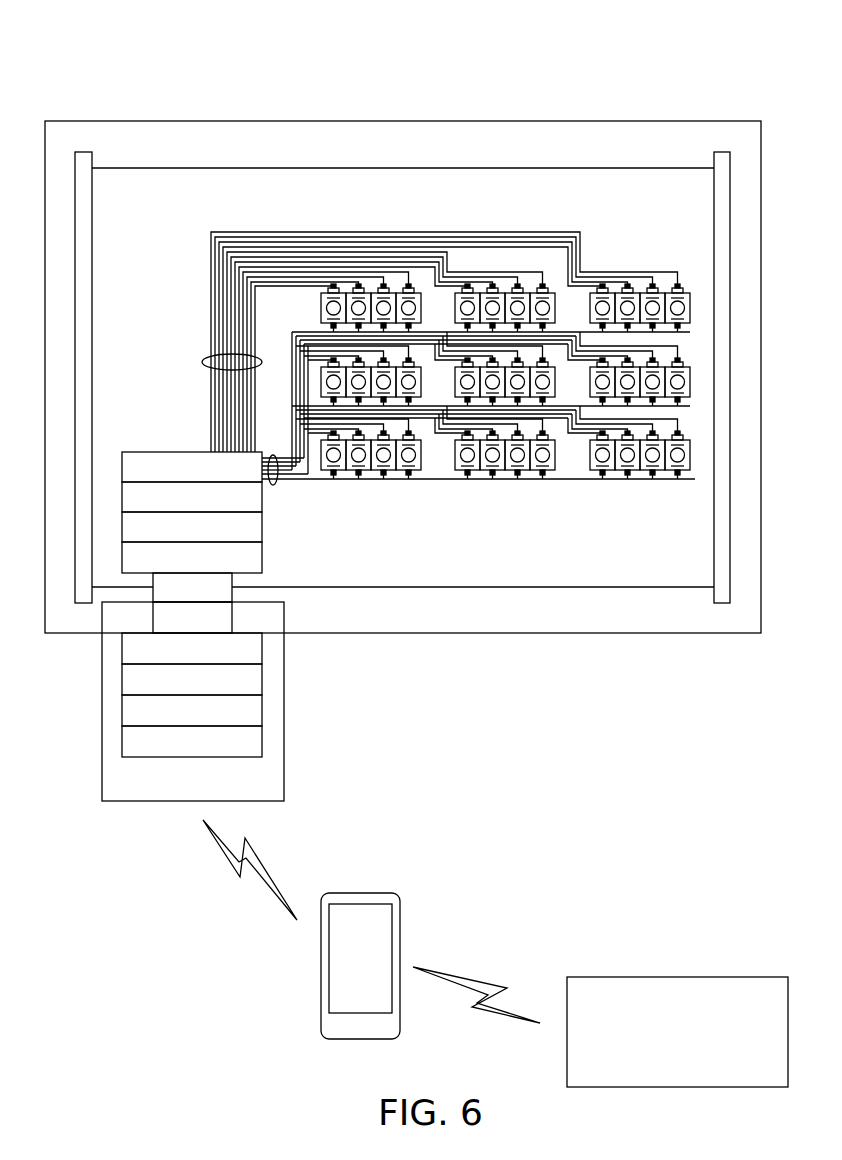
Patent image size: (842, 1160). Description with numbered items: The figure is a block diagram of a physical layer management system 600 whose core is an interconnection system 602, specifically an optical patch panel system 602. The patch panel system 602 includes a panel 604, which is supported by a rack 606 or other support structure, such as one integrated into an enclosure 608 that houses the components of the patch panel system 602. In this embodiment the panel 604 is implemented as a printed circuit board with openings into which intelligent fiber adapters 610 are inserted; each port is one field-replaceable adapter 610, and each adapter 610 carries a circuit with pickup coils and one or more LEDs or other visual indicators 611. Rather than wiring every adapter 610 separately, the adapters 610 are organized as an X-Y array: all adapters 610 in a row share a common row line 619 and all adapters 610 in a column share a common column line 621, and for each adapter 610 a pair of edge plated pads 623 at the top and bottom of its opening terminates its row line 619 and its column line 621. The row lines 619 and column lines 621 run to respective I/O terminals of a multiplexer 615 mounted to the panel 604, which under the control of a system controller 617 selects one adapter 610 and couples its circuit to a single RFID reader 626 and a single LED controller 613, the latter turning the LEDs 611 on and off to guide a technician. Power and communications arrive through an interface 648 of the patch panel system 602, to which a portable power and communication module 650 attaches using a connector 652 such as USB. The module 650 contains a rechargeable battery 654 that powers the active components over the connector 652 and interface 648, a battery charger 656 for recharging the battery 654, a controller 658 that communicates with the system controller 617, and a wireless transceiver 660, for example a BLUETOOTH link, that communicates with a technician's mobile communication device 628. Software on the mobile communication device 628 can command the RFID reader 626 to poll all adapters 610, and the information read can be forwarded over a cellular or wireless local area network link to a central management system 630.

The physical layer management (PLM) system 600 is at (452, 38).
The interconnection system (optical patch panel system) 602 is at (338, 108).
The panel 604 is at (505, 525).
The rack 606 is at (730, 443).
The enclosure 608 is at (761, 285).
The intelligent fiber adapter 610 is at (556, 460).
The LED (visual indicator) 611 is at (690, 433).
The LED controller 613 is at (192, 527).
The multiplexer 615 is at (192, 467).
The system controller 617 is at (192, 557).
The row line 619 is at (277, 483).
The column line 621 is at (222, 360).
The edge plated pads 623 is at (688, 285).
The RFID reader 626 is at (192, 497).
The mobile communication device 628 is at (400, 927).
The central management system 630 is at (677, 1032).
The interface 648 is at (192, 587).
The portable power and communication module 650 is at (193, 701).
The connector 652 is at (192, 617).
The rechargeable battery 654 is at (192, 648).
The battery charger 656 is at (192, 679).
The controller 658 is at (192, 710).
The wireless transceiver 660 is at (192, 741).